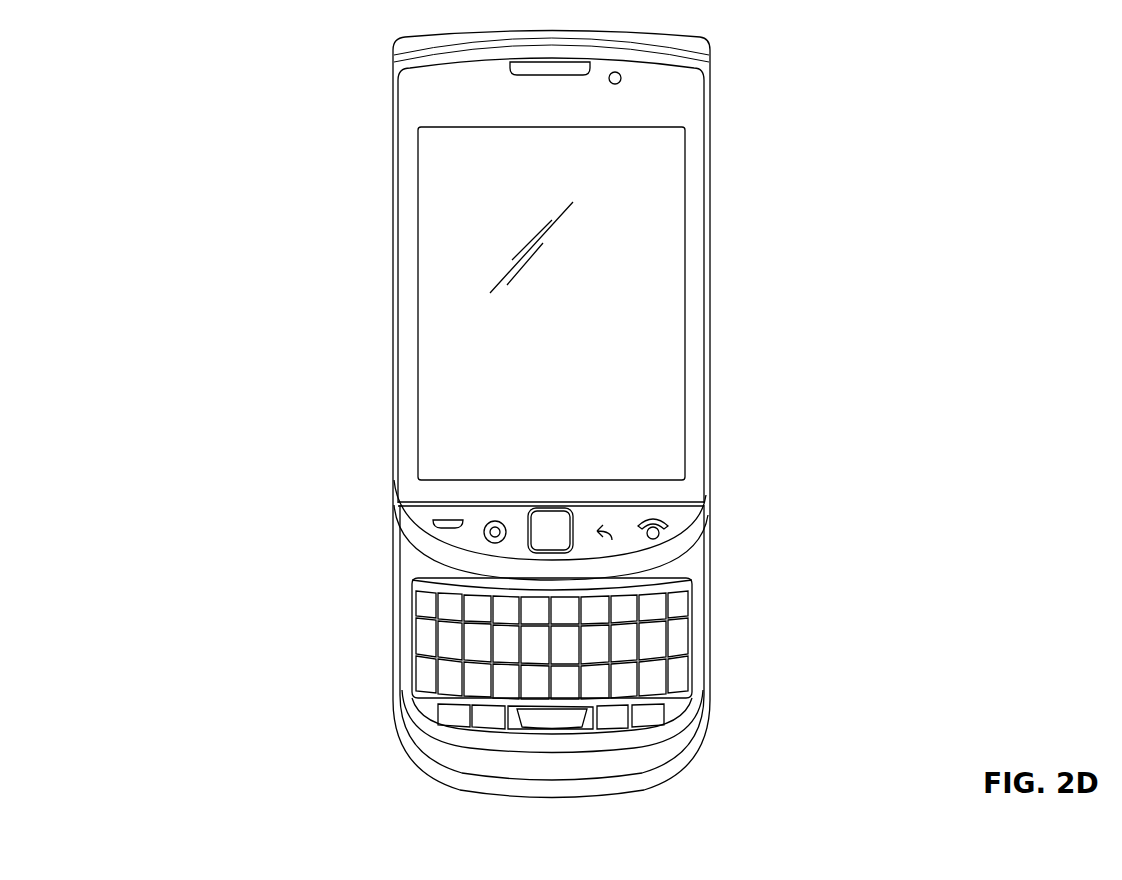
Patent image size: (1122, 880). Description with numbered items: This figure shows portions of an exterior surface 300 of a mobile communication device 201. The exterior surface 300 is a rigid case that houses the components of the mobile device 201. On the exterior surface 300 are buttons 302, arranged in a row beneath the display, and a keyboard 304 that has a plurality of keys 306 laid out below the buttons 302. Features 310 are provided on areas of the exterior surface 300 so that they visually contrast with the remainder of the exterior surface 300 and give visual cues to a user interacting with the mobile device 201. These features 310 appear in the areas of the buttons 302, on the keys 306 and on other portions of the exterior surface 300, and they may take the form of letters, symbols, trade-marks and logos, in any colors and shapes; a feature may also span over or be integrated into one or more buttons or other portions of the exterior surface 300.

The mobile communication device 201 is at (786, 71).
The exterior surface 300 is at (712, 138).
The buttons 302 is at (485, 540).
The keyboard 304 is at (720, 582).
The keys 306 is at (420, 632).
The features 310 is at (518, 117).